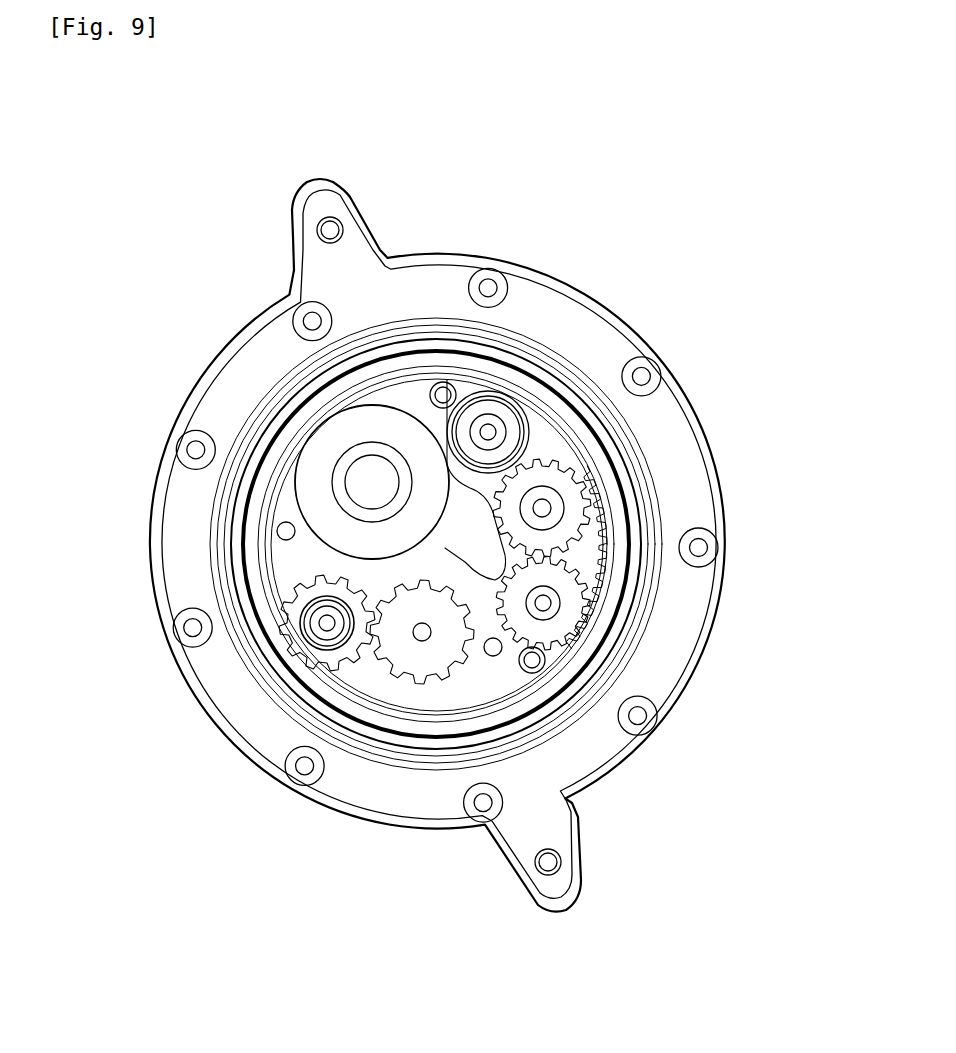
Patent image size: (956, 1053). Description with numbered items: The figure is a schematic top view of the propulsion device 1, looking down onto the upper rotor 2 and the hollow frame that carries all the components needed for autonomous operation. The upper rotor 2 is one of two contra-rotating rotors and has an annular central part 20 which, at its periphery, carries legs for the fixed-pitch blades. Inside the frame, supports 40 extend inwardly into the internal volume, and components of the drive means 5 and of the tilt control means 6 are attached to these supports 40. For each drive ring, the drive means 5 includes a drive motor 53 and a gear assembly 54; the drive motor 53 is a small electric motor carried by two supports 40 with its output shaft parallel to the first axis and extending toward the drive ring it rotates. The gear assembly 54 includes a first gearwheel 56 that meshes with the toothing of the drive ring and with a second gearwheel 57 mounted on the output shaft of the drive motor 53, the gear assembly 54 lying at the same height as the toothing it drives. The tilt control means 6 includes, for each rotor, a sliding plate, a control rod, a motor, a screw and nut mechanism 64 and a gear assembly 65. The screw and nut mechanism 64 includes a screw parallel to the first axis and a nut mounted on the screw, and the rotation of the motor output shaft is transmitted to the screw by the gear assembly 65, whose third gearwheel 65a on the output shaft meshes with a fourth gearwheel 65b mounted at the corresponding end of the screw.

The propulsion device 1 is at (620, 185).
The upper rotor 2 is at (227, 342).
The annular central part 20 is at (206, 401).
The drive means 5 is at (305, 655).
The tilt control means 6 is at (602, 512).
The supports 40 is at (442, 692).
The drive motor 53 is at (307, 472).
The gear assembly 54 is at (382, 653).
The first gearwheel 56 is at (294, 638).
The second gearwheel 57 is at (401, 660).
The screw and nut mechanism 64 is at (507, 422).
The gear assembly 65 is at (570, 562).
The third gearwheel 65a is at (623, 470).
The fourth gearwheel 65b is at (593, 627).